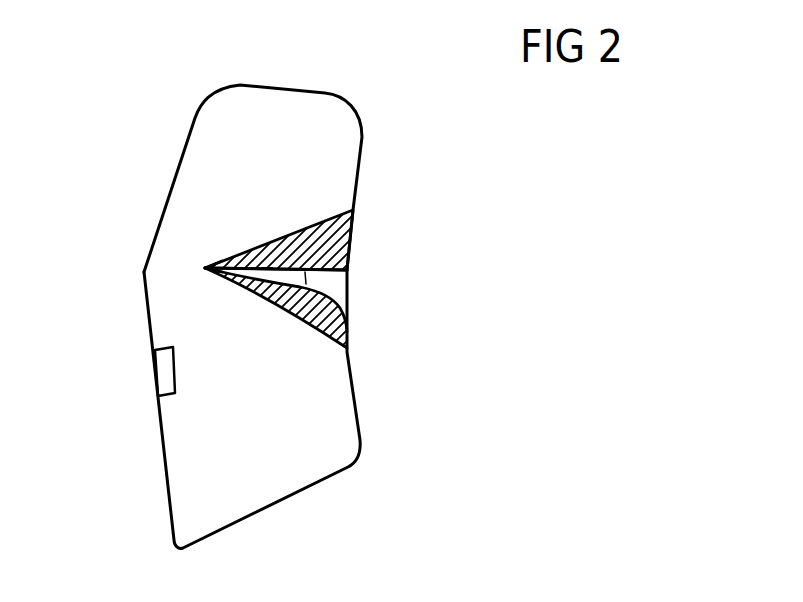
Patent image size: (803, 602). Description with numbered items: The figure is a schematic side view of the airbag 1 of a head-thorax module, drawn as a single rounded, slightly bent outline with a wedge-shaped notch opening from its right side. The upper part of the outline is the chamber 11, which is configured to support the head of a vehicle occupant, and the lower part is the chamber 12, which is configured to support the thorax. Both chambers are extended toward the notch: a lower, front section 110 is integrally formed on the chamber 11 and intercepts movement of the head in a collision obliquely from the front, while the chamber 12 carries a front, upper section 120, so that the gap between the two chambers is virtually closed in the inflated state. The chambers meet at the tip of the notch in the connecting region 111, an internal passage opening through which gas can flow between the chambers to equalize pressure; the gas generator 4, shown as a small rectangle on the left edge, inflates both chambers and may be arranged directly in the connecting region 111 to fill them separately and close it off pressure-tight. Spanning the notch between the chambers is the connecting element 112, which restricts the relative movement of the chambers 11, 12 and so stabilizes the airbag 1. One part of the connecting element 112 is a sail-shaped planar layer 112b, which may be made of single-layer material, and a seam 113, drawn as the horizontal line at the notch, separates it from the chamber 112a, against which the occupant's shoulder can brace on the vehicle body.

The airbag 1 is at (312, 285).
The chamber 11 is at (322, 112).
The chamber 12 is at (333, 423).
The gas generator 4 is at (163, 367).
The lower, front section 110 is at (313, 247).
The connecting region 111 is at (192, 262).
The connecting element 112 is at (333, 287).
The chamber 112a is at (338, 278).
The planar layer 112b is at (268, 275).
The seam 113 is at (338, 265).
The front, upper section 120 is at (318, 322).